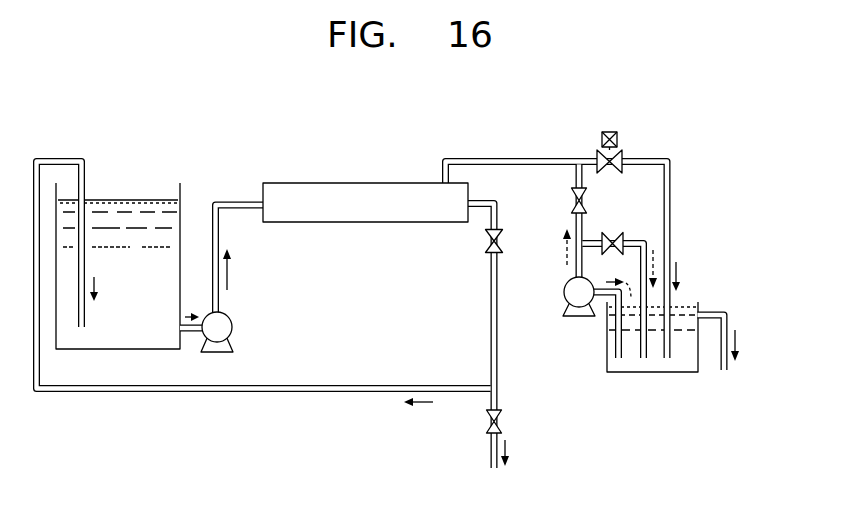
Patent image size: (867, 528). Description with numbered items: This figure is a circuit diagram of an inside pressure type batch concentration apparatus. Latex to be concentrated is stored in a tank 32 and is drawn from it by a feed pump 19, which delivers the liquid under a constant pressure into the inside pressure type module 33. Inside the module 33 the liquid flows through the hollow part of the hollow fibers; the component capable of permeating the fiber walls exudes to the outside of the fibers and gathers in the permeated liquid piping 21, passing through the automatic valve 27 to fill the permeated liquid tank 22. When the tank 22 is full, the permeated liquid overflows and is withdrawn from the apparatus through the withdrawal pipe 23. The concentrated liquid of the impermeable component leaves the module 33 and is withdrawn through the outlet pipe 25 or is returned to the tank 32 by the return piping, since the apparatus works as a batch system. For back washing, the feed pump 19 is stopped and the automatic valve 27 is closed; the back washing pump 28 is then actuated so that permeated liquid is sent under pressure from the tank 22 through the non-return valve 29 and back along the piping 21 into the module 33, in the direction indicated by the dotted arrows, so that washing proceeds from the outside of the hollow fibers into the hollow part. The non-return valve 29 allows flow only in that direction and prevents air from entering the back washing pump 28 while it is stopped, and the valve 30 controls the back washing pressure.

The feed pump 19 is at (232, 327).
The permeated liquid piping 21 is at (470, 157).
The permeated liquid tank 22 is at (625, 373).
The withdrawal pipe for the permeated liquid 23 is at (719, 360).
The outlet pipe for the concentrated liquid 25 is at (489, 449).
The automatic valve 27 is at (619, 134).
The back washing pump 28 is at (566, 296).
The non-return valve 29 is at (571, 197).
The valve for controlling back washing pressure 30 is at (616, 233).
The tank for latex to be concentrated 32 is at (107, 350).
The inside pressure type module 33 is at (373, 223).